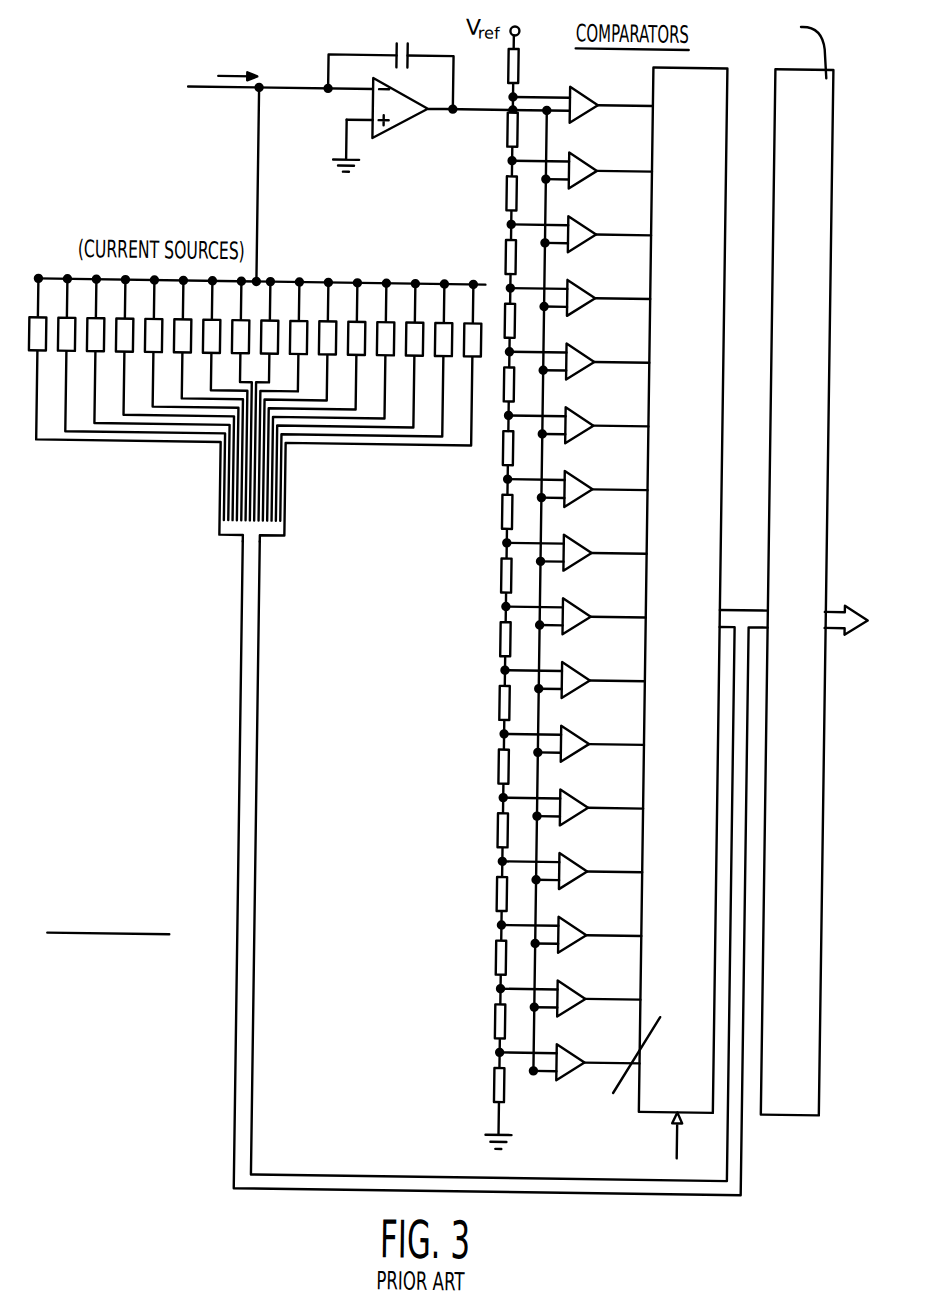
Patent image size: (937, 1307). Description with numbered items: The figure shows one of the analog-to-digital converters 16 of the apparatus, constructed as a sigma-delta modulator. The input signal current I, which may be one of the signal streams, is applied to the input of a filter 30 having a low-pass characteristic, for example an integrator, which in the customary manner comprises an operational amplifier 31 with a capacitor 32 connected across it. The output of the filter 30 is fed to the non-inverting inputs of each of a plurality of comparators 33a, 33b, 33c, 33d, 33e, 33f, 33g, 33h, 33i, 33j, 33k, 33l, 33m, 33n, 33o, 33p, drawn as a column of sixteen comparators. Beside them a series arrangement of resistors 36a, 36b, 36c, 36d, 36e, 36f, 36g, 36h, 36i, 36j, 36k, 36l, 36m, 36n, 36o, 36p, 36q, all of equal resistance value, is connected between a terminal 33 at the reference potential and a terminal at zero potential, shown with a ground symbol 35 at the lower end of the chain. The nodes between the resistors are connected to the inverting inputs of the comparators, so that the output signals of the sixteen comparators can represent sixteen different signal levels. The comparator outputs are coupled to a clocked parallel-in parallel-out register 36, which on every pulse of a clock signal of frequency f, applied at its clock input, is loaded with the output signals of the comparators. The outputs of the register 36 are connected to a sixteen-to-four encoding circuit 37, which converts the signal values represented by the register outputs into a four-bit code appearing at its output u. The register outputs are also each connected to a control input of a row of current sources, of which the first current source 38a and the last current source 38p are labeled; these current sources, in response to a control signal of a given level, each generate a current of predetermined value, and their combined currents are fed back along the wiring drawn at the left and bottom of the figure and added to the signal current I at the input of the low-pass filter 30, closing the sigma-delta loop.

The analog-to-digital converter 16 is at (135, 77).
The filter 30 is at (377, 167).
The operational amplifier 31 is at (398, 122).
The capacitor 32 is at (407, 45).
The terminal at reference potential 33 is at (505, 38).
The comparator 33a is at (584, 102).
The comparator 33b is at (584, 168).
The comparator 33c is at (584, 231).
The comparator 33d is at (584, 295).
The comparator 33e is at (584, 359).
The comparator 33f is at (584, 422).
The comparator 33g is at (584, 486).
The comparator 33h is at (584, 550).
The comparator 33i is at (584, 614).
The comparator 33j is at (584, 677).
The comparator 33k is at (584, 741).
The comparator 33l is at (584, 805).
The comparator 33m is at (584, 868).
The comparator 33n is at (584, 932).
The comparator 33o is at (584, 996).
The comparator 33p is at (584, 1060).
The ground connection 35 is at (528, 1133).
The register 36 is at (668, 1111).
The resistor 36a is at (513, 64).
The resistor 36b is at (513, 128).
The resistor 36c is at (513, 191).
The resistor 36d is at (513, 255).
The resistor 36e is at (508, 321).
The resistor 36f is at (508, 385).
The resistor 36g is at (508, 448).
The resistor 36h is at (513, 510).
The resistor 36i is at (513, 574).
The resistor 36j is at (513, 637).
The resistor 36k is at (513, 701).
The resistor 36l is at (513, 765).
The resistor 36m is at (513, 828).
The resistor 36n is at (513, 892).
The resistor 36o is at (513, 956).
The resistor 36p is at (513, 1020).
The resistor 36q is at (513, 1083).
The 16-to-4 encoding circuit 37 is at (809, 1104).
The current source 38a is at (33, 323).
The current source 38p is at (471, 336).